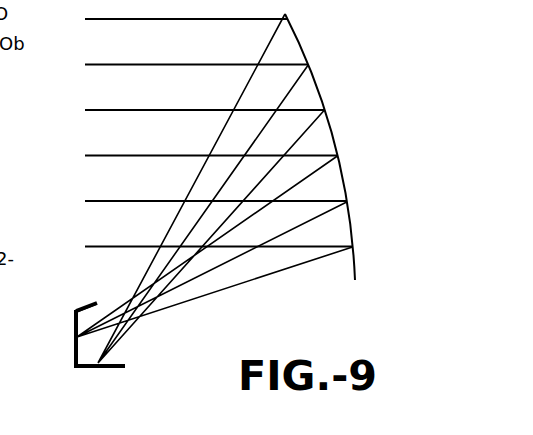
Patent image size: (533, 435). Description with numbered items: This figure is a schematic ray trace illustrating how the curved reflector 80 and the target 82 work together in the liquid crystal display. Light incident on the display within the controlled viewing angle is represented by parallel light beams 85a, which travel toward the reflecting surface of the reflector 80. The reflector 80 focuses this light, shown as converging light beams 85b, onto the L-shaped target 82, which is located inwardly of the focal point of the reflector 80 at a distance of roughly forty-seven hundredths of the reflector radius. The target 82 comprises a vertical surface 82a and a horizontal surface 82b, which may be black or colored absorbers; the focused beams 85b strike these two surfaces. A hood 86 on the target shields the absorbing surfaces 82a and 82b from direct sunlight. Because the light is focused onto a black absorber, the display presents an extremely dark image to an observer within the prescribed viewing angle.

The reflector 80 is at (305, 44).
The target 82 is at (74, 348).
The vertical surface 82a is at (80, 307).
The horizontal surface 82b is at (112, 363).
The light beams 85a is at (102, 245).
The light beams 85b is at (249, 91).
The hood 86 is at (90, 302).